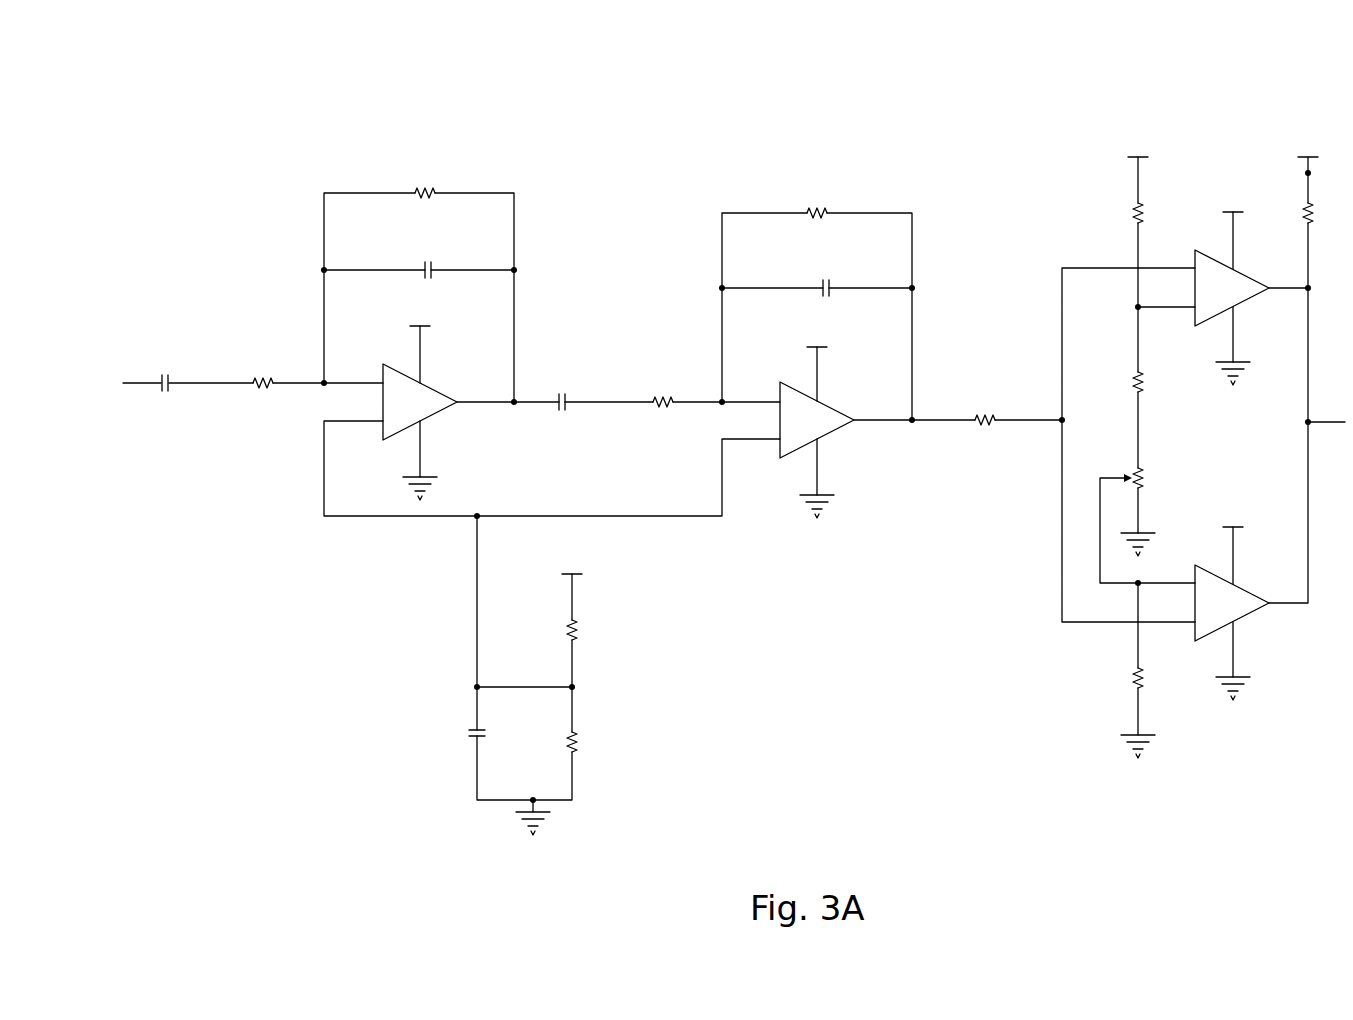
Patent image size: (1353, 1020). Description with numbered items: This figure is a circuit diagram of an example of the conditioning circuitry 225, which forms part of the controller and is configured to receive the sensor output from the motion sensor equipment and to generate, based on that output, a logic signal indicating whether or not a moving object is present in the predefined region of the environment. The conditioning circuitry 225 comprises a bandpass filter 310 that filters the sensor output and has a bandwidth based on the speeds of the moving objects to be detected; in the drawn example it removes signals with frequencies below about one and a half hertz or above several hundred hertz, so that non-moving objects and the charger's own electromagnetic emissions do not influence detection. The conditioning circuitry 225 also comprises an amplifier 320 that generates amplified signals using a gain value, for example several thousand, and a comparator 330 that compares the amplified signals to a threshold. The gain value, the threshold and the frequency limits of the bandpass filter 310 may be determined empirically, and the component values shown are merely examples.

The conditioning circuitry 225 is at (266, 118).
The bandpass filter 310 is at (310, 117).
The amplifier 320 is at (937, 117).
The comparator 330 is at (1104, 110).